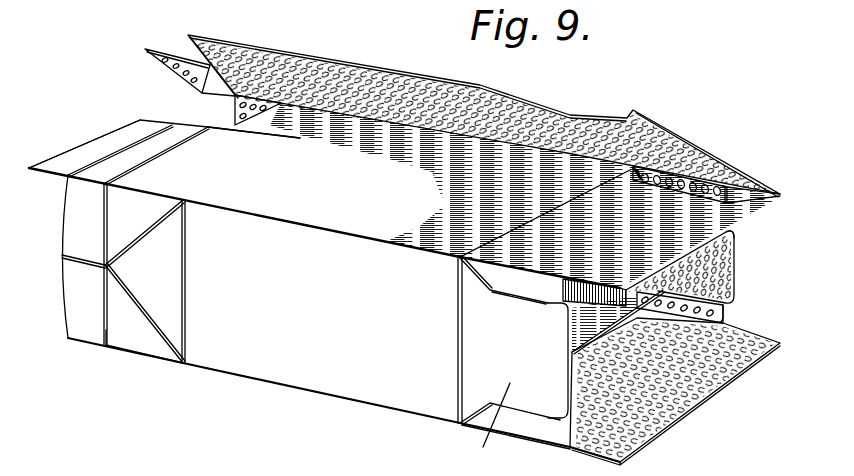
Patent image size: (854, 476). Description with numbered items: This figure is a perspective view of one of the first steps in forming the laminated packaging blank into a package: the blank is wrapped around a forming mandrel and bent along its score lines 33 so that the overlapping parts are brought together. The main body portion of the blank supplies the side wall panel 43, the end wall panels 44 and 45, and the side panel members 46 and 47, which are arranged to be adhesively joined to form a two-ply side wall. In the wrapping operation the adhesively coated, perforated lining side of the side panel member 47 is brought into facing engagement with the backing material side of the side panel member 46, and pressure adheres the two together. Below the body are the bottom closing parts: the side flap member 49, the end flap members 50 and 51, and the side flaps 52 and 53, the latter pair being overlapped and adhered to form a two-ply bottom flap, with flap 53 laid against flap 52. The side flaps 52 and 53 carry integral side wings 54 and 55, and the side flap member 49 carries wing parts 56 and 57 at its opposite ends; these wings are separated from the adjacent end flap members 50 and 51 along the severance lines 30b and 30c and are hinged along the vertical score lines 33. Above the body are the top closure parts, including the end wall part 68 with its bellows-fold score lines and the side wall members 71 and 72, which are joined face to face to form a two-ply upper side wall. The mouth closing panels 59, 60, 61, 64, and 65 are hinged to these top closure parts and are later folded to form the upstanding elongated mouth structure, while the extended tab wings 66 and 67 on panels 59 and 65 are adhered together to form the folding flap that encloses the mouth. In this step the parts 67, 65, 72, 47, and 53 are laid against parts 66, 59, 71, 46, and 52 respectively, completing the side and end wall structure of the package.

The severance line 30b is at (500, 293).
The severance line 30c is at (720, 293).
The score lines 33 is at (139, 294).
The side wall panel 43 is at (565, 337).
The end wall panel 44 is at (370, 348).
The end wall panel 45 is at (593, 293).
The side panel member 46 is at (416, 208).
The side panel member 47 is at (427, 77).
The side flap member 49 is at (693, 403).
The end flap member 50 is at (486, 425).
The end flap member 51 is at (733, 265).
The side flap member 52 is at (742, 223).
The side flap member 53 is at (698, 143).
The side wing 54 is at (528, 287).
The side wing 55 is at (768, 193).
The wing part 56 is at (527, 430).
The wing part 57 is at (727, 320).
The mouth closing panel 59 is at (177, 138).
The mouth closing panel 60 is at (66, 223).
The mouth closing panel 61 is at (78, 285).
The mouth closing panel 64 is at (234, 106).
The mouth closing panel 65 is at (200, 62).
The tab wing 66 is at (76, 153).
The tab wing 67 is at (151, 50).
The end wall part 68 is at (113, 341).
The side wall member 71 is at (223, 172).
The side wall member 72 is at (230, 44).